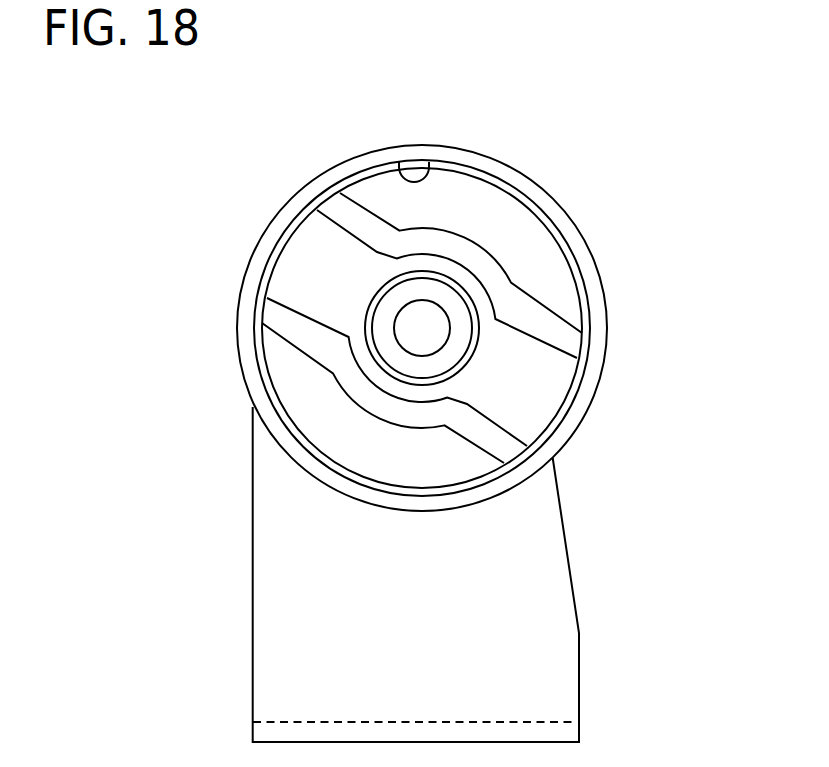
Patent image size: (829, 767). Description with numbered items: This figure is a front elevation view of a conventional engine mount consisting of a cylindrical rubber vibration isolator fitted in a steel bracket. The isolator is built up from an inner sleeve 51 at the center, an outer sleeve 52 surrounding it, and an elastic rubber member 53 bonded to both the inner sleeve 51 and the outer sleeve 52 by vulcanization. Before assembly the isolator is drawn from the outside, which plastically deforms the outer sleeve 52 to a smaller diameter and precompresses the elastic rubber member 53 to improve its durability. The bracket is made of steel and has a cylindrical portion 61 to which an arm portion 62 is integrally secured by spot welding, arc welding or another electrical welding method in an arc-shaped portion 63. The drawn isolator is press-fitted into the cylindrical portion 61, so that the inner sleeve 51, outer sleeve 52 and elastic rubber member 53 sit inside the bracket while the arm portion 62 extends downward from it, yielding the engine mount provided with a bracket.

The inner sleeve 51 is at (392, 312).
The outer sleeve 52 is at (398, 172).
The elastic rubber member 53 is at (547, 390).
The cylindrical portion 61 is at (258, 280).
The arm portion 62 is at (543, 573).
The arc-shaped portion 63 is at (578, 428).